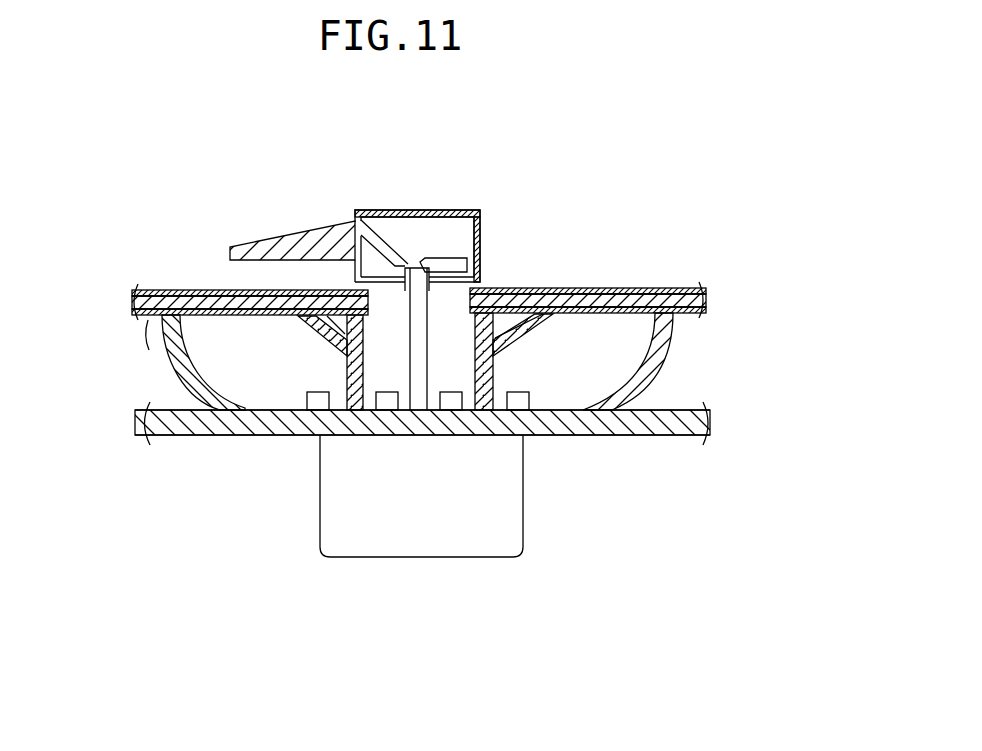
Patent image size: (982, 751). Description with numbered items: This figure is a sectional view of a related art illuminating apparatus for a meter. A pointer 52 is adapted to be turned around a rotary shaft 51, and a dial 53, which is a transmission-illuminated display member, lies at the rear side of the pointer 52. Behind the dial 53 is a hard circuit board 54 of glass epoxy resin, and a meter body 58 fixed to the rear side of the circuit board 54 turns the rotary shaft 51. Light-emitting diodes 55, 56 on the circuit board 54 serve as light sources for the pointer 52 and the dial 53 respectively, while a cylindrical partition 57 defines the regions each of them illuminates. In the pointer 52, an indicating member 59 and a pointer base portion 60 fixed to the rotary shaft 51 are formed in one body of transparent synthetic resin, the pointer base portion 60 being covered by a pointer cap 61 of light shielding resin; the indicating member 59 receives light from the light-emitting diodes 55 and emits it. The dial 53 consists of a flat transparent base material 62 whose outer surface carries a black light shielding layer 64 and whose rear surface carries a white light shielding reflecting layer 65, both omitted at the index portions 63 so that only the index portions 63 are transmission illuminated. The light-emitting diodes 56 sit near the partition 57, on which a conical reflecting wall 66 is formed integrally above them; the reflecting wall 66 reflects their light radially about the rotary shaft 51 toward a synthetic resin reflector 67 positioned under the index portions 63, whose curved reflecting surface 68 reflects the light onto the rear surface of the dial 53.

The rotary shaft 51 is at (413, 338).
The pointer 52 is at (445, 184).
The dial 53 is at (681, 267).
The circuit board 54 is at (607, 425).
The light-emitting diodes 55 is at (385, 400).
The light-emitting diodes 56 is at (320, 402).
The partition 57 is at (312, 390).
The meter body 58 is at (330, 558).
The indicating member 59 is at (267, 247).
The pointer base portion 60 is at (435, 262).
The pointer cap 61 is at (460, 207).
The base material 62 is at (170, 291).
The index portions 63 is at (207, 290).
The light shielding layer 64 is at (250, 290).
The light shielding reflecting layer 65 is at (265, 343).
The reflecting wall 66 is at (297, 290).
The reflector 67 is at (177, 377).
The reflecting surface 68 is at (232, 408).